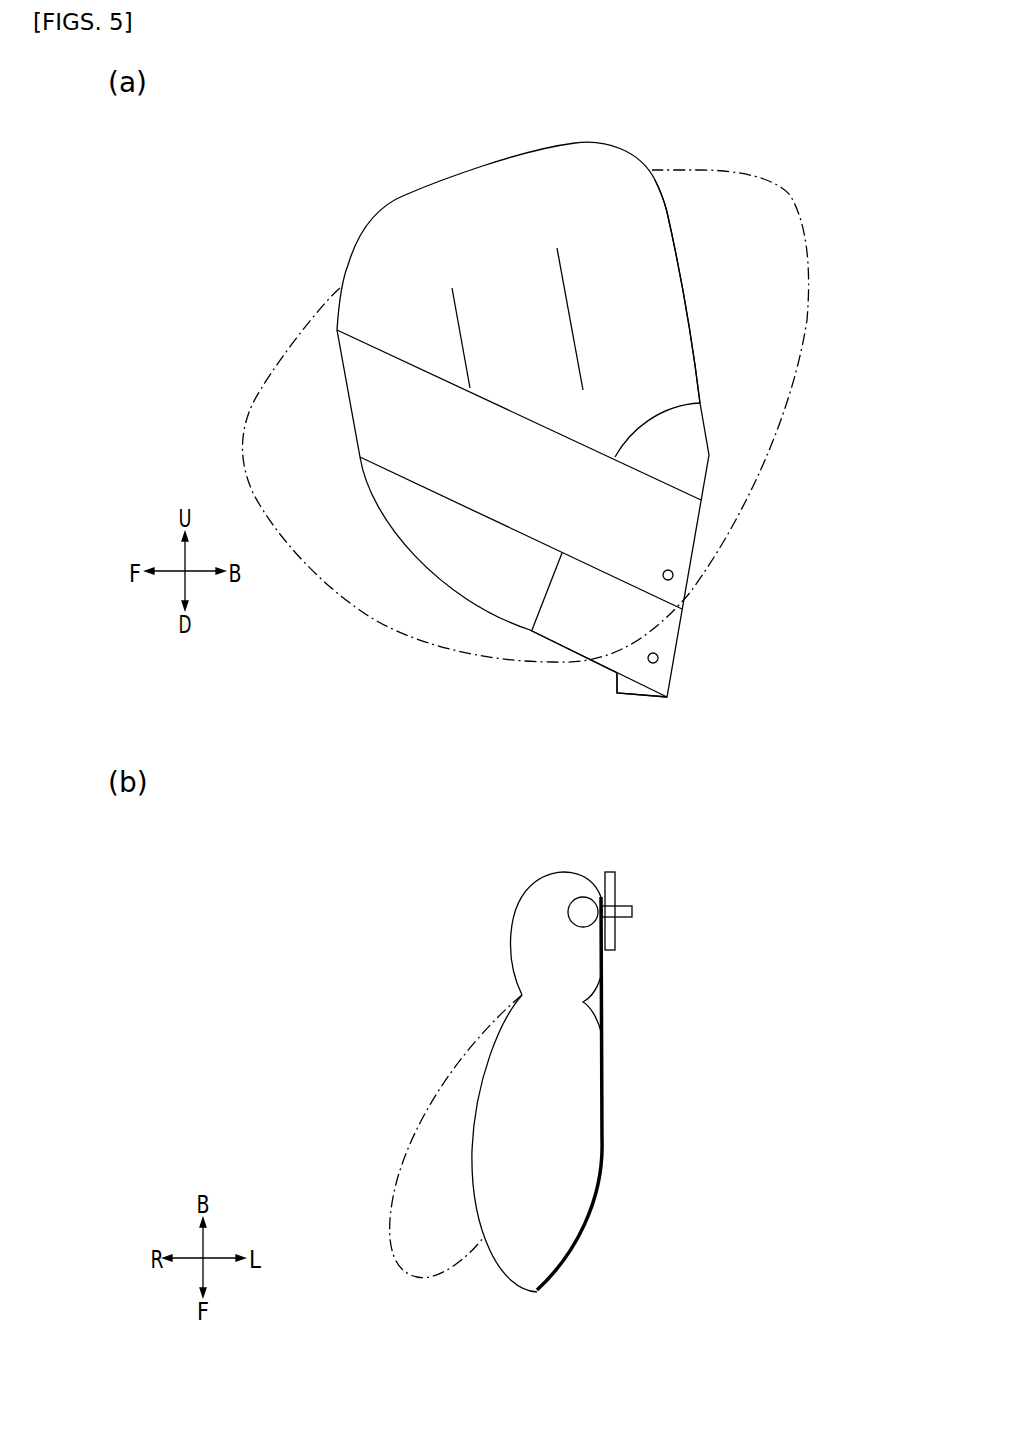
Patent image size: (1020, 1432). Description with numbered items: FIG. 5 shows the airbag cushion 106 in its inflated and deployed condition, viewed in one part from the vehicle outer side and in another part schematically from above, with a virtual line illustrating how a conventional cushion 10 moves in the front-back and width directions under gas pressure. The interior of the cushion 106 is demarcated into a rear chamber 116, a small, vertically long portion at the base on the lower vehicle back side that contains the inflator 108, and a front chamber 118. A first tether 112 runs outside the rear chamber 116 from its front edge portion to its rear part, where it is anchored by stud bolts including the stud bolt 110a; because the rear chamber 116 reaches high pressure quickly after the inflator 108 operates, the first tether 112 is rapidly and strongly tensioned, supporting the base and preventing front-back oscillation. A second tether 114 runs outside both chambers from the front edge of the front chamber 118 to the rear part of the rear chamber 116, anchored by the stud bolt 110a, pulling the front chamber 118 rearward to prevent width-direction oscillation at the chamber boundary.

The conventional cushion 10 is at (275, 360).
The cushion 106 is at (618, 142).
The inflator 108 is at (583, 898).
The stud bolt 110a is at (634, 911).
The first tether 112 is at (665, 632).
The second tether 114 is at (675, 520).
The rear chamber 116 is at (684, 458).
The front chamber 118 is at (650, 257).